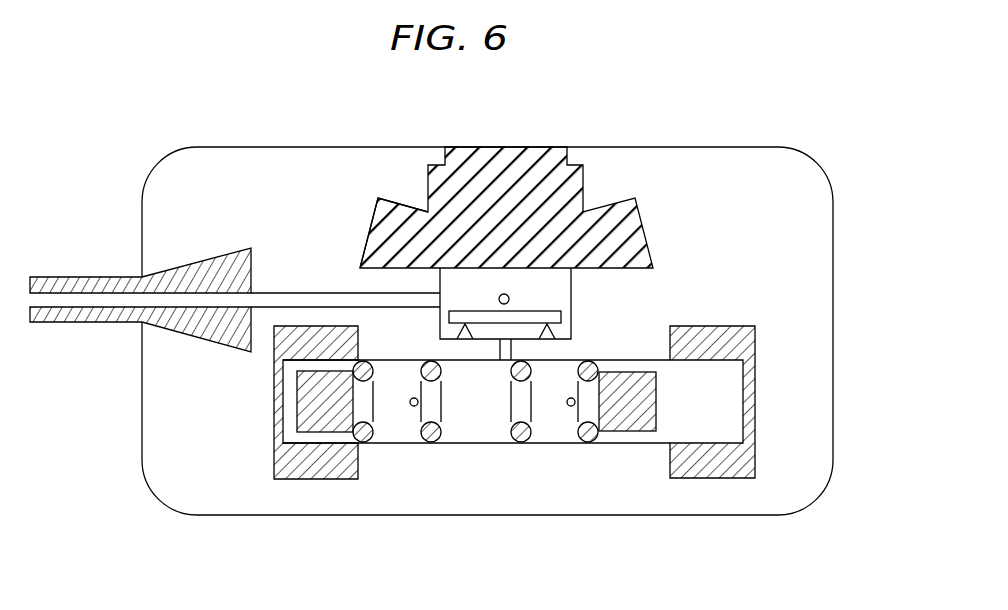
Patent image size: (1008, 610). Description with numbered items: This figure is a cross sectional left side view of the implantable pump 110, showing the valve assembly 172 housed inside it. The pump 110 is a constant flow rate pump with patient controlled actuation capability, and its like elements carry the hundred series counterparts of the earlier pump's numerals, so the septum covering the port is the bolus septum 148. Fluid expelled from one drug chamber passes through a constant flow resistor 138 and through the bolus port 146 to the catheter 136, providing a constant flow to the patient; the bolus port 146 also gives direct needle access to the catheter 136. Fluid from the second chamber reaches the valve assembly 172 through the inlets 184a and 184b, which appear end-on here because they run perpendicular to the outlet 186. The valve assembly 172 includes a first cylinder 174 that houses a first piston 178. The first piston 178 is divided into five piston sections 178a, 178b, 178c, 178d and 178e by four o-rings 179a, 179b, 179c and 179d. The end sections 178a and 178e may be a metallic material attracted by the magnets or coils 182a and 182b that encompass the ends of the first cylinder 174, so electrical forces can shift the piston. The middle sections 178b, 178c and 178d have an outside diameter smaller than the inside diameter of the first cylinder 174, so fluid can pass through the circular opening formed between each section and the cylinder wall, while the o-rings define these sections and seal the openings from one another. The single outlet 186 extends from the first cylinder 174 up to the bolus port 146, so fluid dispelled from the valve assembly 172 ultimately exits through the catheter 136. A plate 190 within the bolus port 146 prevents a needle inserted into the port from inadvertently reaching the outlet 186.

The implantable pump 110 is at (697, 98).
The catheter 136 is at (57, 277).
The constant flow resistor 138 is at (504, 294).
The bolus port 146 is at (538, 288).
The wedge 148 is at (378, 218).
The valve assembly 172 is at (767, 443).
The first cylinder 174 is at (381, 443).
The first piston 178 is at (451, 423).
The piston section 178a is at (630, 373).
The piston section 178b is at (555, 420).
The piston section 178c is at (490, 417).
The piston section 178d is at (393, 418).
The piston section 178e is at (312, 405).
The o-ring 179a is at (618, 434).
The o-ring 179b is at (522, 443).
The o-ring 179c is at (443, 443).
The o-ring 179d is at (282, 442).
The magnet or coil 182a is at (718, 468).
The magnet or coil 182b is at (293, 467).
The inlet 184a is at (572, 406).
The inlet 184b is at (414, 406).
The outlet 186 is at (500, 350).
The plate 190 is at (545, 308).